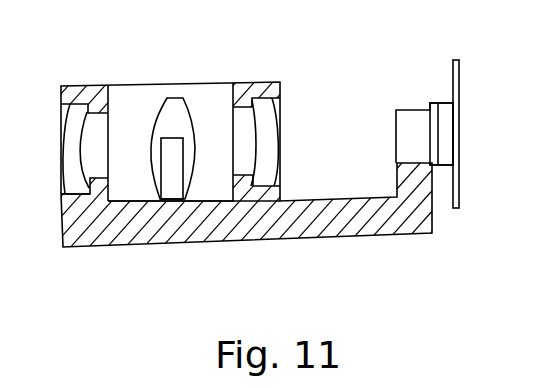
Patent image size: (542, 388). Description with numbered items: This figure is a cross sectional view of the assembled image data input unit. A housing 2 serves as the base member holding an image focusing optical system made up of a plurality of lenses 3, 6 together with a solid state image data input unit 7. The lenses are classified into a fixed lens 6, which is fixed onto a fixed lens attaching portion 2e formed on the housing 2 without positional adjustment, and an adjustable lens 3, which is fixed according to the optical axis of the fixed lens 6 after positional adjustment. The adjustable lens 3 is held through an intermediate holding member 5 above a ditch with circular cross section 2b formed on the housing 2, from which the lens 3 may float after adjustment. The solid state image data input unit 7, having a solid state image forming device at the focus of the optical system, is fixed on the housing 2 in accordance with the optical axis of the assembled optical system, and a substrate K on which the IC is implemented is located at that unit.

The housing 2 is at (293, 237).
The ditch with circular cross section 2b is at (208, 194).
The fixed lens attaching portion 2e is at (62, 187).
The lens 3 is at (172, 98).
The intermediate holding member 5 is at (168, 160).
The fixed lens 6 is at (71, 139).
The solid state image data input unit 7 is at (443, 110).
The substrate K is at (459, 81).